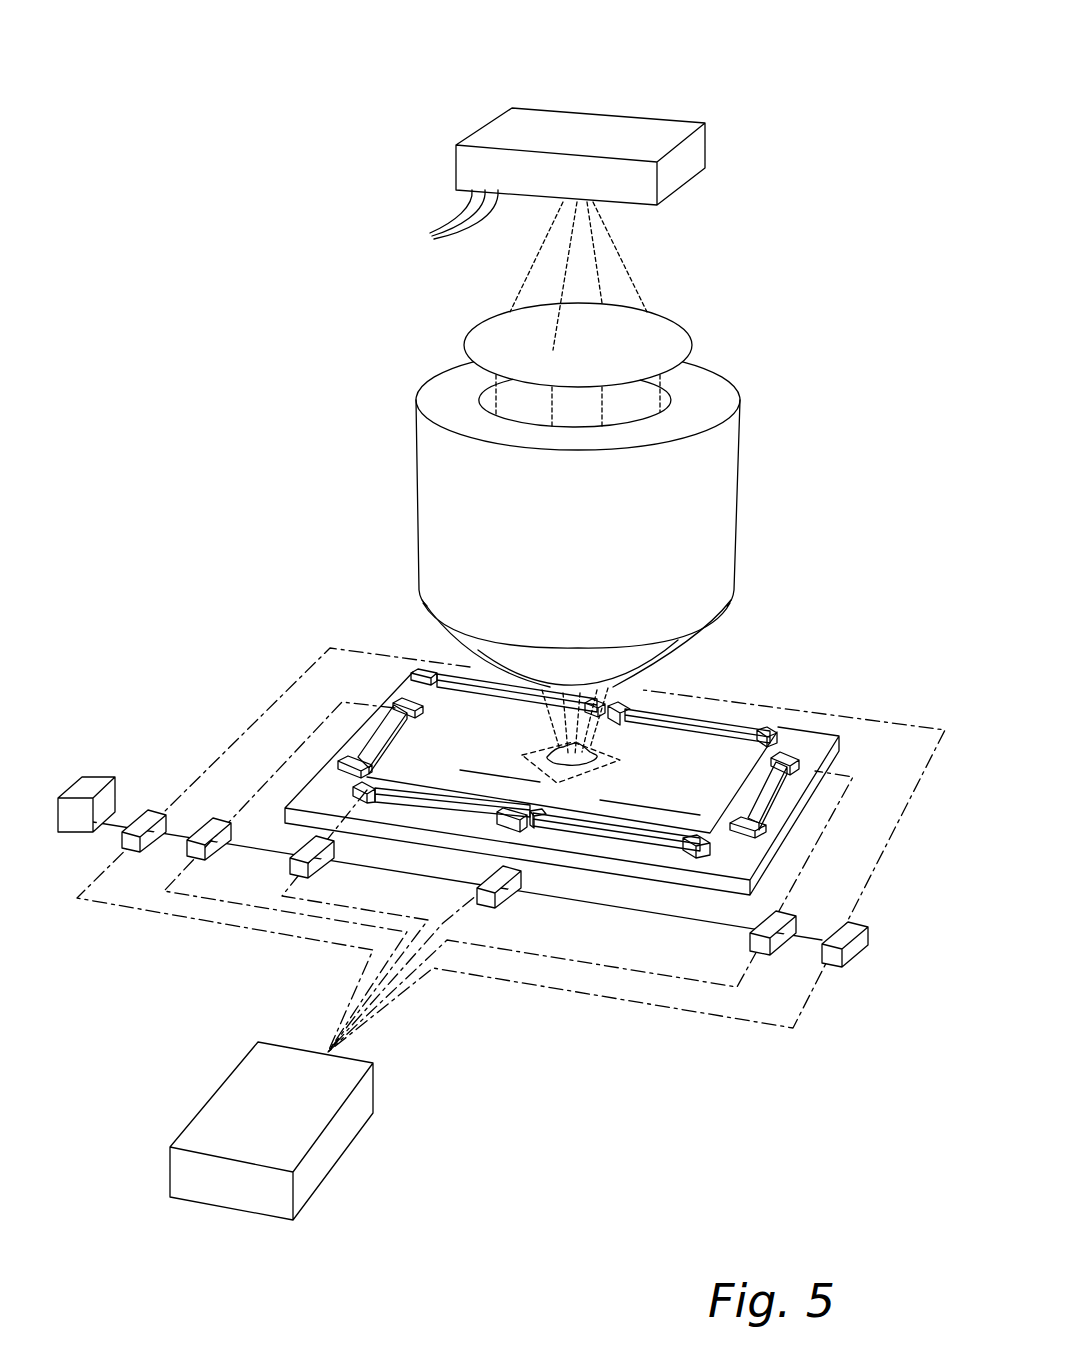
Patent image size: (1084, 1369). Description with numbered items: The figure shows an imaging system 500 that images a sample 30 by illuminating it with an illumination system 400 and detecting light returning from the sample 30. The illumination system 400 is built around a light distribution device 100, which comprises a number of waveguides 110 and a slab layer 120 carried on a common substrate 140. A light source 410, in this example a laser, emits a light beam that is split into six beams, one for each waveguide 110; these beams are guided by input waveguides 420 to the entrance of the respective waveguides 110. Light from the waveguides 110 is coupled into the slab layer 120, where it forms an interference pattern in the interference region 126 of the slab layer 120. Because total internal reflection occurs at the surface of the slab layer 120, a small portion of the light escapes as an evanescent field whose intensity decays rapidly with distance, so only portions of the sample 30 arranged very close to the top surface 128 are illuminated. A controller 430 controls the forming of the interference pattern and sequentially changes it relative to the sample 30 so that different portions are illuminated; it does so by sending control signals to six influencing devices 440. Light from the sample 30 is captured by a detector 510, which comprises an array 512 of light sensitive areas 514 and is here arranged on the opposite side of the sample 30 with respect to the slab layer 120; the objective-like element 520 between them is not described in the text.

The imaging system 500 is at (298, 93).
The detector 510 is at (680, 160).
The array 512 is at (642, 207).
The light sensitive areas 514 is at (447, 230).
The objective lens unit 520 is at (437, 497).
The light distribution device 100 is at (848, 643).
The sample 30 is at (605, 755).
The slab layer 120 is at (733, 763).
The interference region 126 is at (530, 748).
The top surface 128 is at (687, 757).
The waveguide 110 is at (786, 753).
The substrate 140 is at (745, 862).
The illumination system 400 is at (126, 729).
The light source 410 is at (240, 1092).
The input waveguides 420 is at (290, 757).
The controller 430 is at (88, 783).
The influencing devices 440 is at (845, 946).